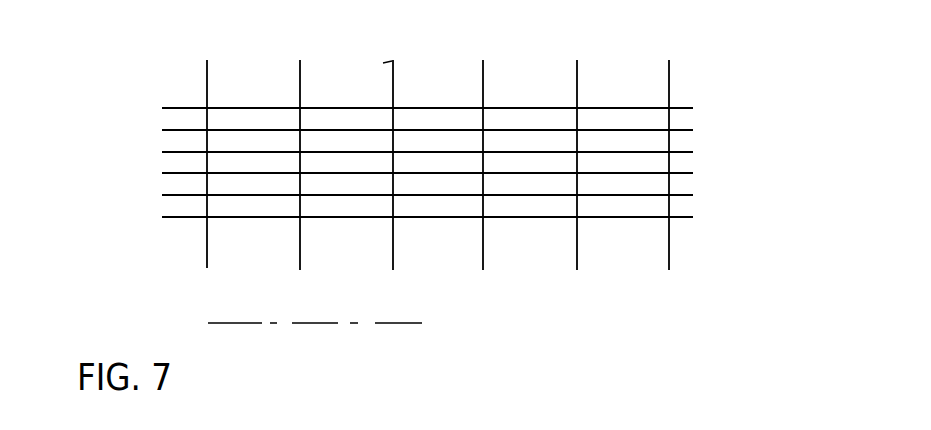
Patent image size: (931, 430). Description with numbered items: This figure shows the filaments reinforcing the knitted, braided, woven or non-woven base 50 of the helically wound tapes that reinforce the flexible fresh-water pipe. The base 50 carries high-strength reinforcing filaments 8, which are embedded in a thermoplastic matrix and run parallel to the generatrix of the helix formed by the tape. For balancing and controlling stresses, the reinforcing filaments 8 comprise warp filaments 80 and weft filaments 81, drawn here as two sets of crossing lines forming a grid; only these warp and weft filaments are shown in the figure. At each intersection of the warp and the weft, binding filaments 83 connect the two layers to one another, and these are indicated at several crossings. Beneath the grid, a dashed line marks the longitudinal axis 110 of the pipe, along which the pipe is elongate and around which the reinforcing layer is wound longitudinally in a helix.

The knitted, braided, woven or non-woven base 50 is at (620, 80).
The reinforcing filaments 8 is at (352, 108).
The warp filaments 80 is at (168, 152).
The weft filaments 81 is at (298, 247).
The binding filaments 83 is at (300, 173).
The longitudinal axis 110 is at (315, 323).